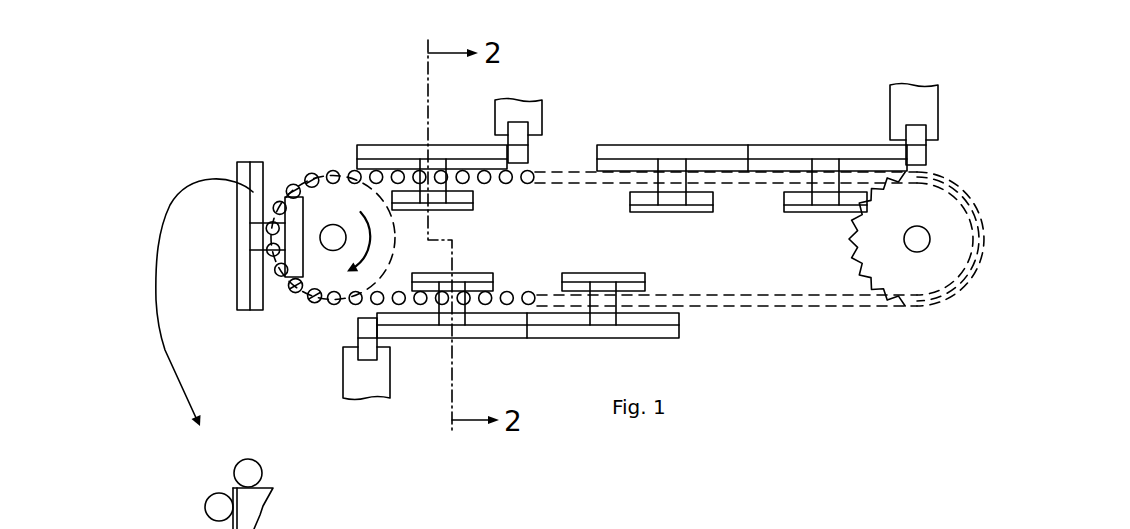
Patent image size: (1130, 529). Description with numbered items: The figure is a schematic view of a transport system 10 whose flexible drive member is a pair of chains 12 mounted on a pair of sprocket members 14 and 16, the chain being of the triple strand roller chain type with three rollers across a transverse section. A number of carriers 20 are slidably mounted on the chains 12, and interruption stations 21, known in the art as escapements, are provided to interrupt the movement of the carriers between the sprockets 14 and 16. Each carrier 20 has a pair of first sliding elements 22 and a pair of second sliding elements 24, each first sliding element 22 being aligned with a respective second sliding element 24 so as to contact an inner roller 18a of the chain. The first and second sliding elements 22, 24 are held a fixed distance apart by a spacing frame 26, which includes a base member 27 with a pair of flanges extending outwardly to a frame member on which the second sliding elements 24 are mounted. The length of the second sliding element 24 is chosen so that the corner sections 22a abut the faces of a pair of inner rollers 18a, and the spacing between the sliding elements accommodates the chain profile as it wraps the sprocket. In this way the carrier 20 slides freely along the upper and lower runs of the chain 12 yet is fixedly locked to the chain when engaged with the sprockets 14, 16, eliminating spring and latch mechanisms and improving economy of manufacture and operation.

The transport system 10 is at (1012, 300).
The chains 12 is at (625, 263).
The sprocket member 14 is at (954, 236).
The sprocket member 16 is at (333, 273).
The inner roller 18a is at (532, 315).
The carrier 20 is at (531, 349).
The interruption station 21 is at (690, 242).
The first sliding element 22 is at (632, 131).
The corner section 22a is at (225, 331).
The second sliding element 24 is at (629, 241).
The spacing frame 26 is at (629, 211).
The base member 27 is at (639, 519).